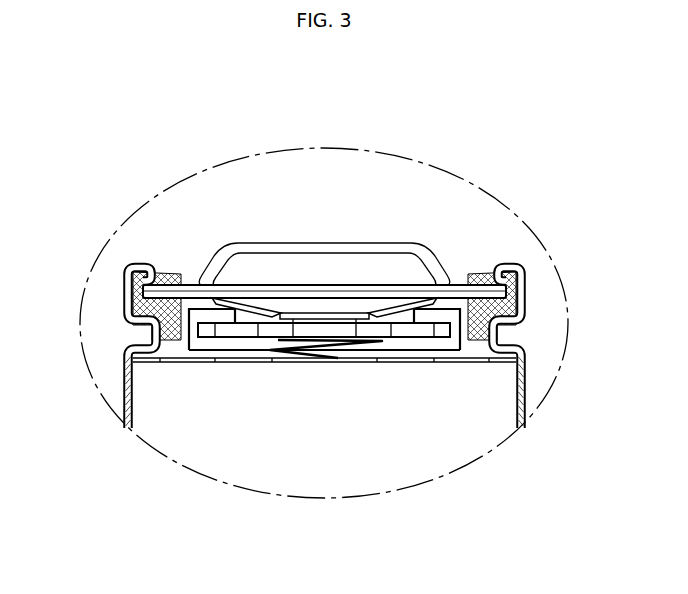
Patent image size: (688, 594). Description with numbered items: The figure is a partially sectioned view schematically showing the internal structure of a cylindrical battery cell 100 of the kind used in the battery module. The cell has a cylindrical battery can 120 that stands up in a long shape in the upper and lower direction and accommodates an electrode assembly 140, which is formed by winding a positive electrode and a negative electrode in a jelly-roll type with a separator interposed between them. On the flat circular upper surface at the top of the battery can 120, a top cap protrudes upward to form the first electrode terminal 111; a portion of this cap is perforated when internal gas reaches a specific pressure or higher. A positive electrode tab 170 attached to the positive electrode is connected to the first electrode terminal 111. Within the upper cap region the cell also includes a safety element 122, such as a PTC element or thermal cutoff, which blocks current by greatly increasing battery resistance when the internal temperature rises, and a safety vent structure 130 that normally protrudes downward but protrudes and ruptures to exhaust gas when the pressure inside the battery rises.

The cylindrical battery cell 100 is at (186, 128).
The first electrode terminal 111 is at (316, 246).
The battery can 120 is at (123, 392).
The safety element 122 is at (388, 285).
The safety vent structure 130 is at (240, 303).
The electrode assembly 140 is at (487, 403).
The positive electrode tab 170 is at (333, 357).